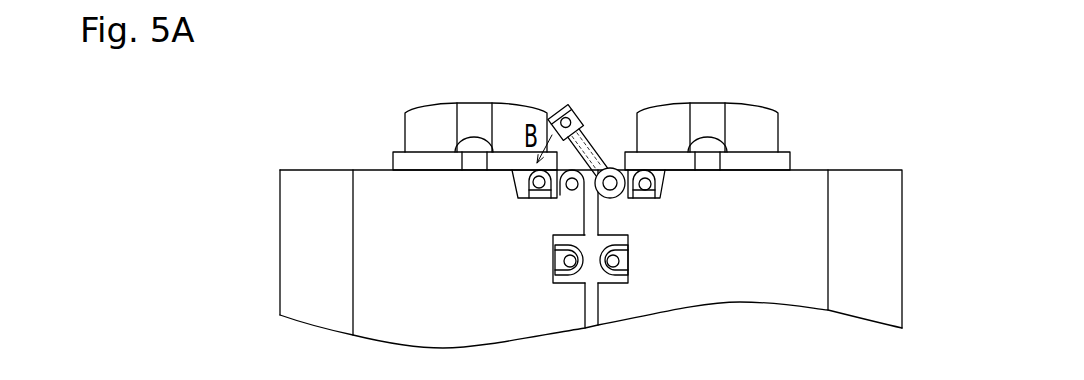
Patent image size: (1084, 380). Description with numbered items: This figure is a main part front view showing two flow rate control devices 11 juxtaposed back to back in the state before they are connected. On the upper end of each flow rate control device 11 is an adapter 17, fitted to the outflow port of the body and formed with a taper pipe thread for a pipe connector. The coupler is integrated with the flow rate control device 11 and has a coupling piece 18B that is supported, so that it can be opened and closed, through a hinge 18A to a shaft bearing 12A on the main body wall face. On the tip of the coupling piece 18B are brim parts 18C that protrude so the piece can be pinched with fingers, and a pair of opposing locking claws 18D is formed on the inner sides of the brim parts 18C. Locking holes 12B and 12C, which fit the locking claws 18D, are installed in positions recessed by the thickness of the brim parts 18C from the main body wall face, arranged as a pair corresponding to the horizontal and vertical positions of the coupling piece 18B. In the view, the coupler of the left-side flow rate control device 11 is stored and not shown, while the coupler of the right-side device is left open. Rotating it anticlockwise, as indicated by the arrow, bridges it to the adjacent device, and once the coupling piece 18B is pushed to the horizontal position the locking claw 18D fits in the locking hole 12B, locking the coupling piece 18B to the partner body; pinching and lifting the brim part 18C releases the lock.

The flow rate control device 11 is at (332, 153).
The adapter 17 is at (405, 128).
The shaft bearing 12A is at (617, 200).
The locking hole 12B is at (517, 181).
The locking hole 12C is at (547, 263).
The hinge 18A is at (617, 154).
The coupling piece 18B is at (591, 143).
The brim part 18C is at (569, 105).
The locking claw 18D is at (557, 113).